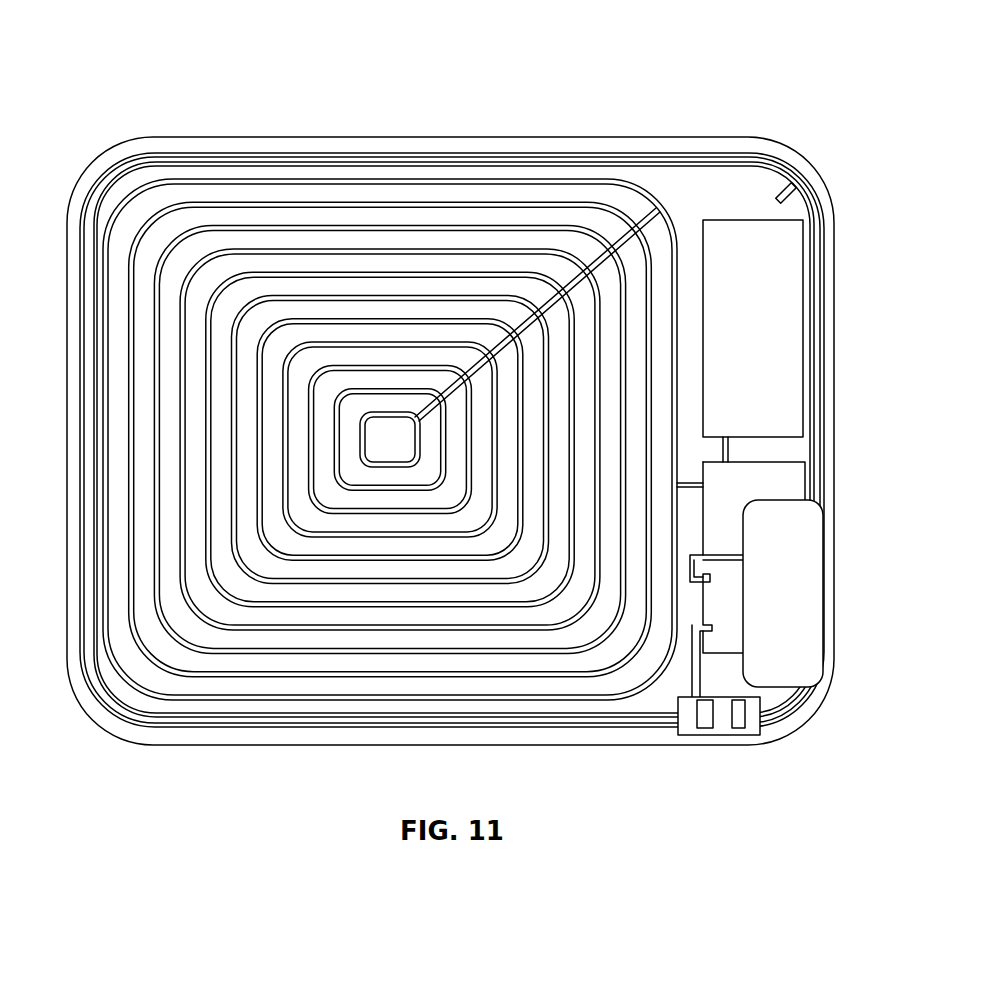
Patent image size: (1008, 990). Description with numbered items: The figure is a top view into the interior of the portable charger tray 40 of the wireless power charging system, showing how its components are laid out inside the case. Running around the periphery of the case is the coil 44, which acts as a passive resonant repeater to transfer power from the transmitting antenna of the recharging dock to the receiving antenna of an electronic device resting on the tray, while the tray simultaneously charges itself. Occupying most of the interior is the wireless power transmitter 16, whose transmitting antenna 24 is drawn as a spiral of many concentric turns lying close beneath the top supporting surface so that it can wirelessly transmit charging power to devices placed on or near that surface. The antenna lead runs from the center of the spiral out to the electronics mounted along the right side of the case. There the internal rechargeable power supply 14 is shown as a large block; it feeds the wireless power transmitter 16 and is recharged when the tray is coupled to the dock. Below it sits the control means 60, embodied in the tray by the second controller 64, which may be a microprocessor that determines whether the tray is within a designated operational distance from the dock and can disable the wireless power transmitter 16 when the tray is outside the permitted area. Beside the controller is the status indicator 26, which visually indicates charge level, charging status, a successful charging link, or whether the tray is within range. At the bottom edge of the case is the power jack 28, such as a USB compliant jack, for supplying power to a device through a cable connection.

The portable charger tray 40 is at (120, 75).
The coil 44 is at (758, 165).
The wireless power transmitter 16 is at (593, 193).
The transmitting antenna 24 is at (641, 186).
The internal rechargeable power supply 14 is at (753, 292).
The control means 60 is at (747, 543).
The second controller 64 is at (775, 482).
The status indicator 26 is at (788, 549).
The power jack 28 is at (690, 722).